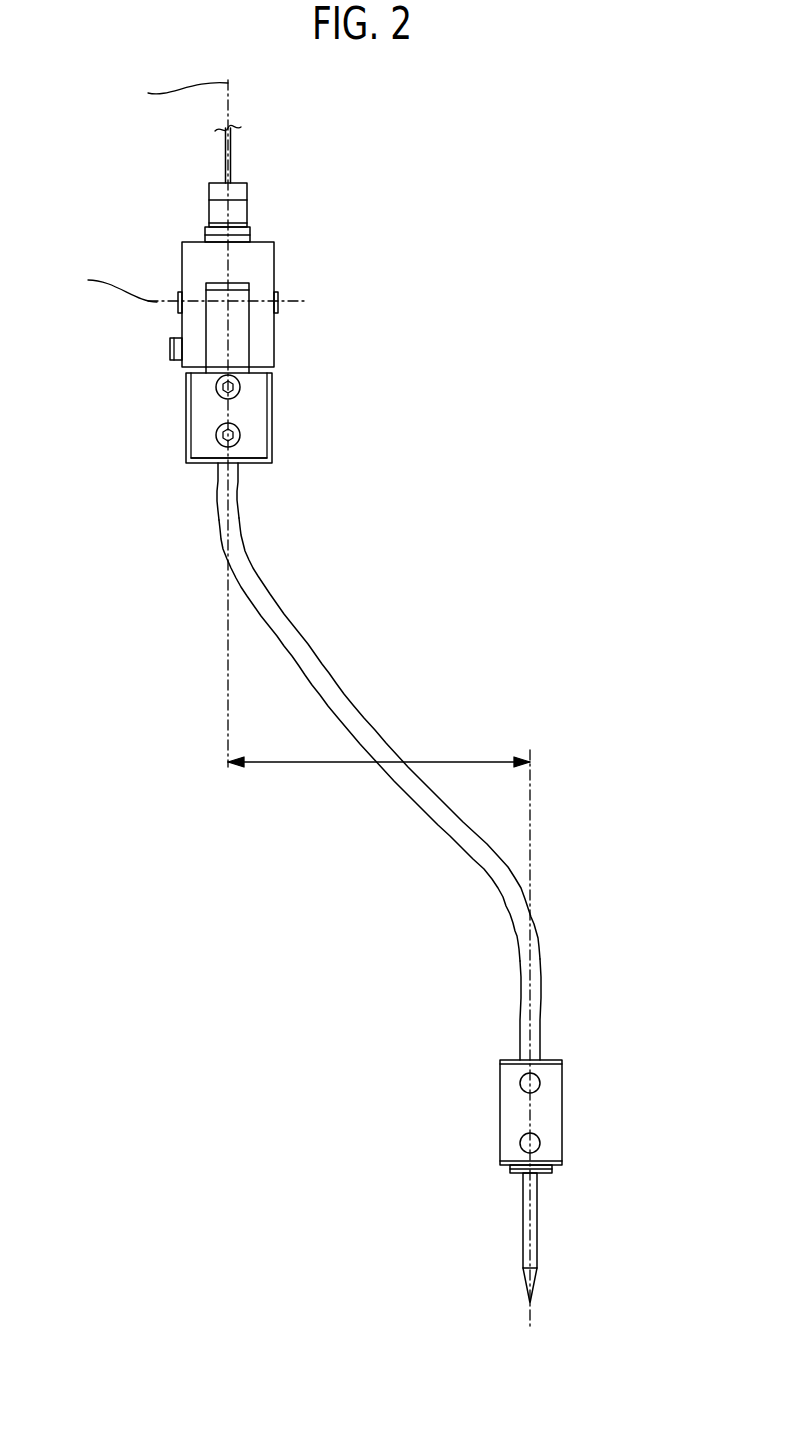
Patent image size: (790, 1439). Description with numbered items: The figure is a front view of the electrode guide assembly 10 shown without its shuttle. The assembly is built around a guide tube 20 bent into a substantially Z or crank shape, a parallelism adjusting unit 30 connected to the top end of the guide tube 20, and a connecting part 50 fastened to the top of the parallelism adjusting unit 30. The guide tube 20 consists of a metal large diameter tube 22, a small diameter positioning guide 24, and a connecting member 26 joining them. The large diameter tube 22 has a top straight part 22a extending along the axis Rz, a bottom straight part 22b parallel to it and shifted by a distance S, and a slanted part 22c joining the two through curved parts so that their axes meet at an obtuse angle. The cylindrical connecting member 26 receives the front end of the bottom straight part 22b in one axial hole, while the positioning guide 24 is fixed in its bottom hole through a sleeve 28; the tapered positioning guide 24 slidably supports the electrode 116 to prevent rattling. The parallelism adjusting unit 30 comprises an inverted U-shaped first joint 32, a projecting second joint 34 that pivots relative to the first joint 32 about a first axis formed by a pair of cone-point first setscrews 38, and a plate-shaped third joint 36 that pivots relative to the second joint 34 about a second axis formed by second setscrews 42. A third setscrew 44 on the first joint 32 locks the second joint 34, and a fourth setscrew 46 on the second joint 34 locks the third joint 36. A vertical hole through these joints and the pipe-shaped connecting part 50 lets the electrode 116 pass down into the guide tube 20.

The electrode guide assembly 10 is at (367, 702).
The guide tube 20 is at (445, 865).
The large diameter tube 22 is at (445, 761).
The top straight part 22a is at (238, 487).
The bottom straight part 22b is at (540, 1027).
The slanted part 22c is at (313, 673).
The positioning guide 24 is at (538, 1220).
The connecting member 26 is at (562, 1110).
The sleeve 28 is at (513, 1175).
The parallelism adjusting unit 30 is at (237, 391).
The first joint 32 is at (260, 270).
The second joint 34 is at (258, 403).
The third joint 36 is at (202, 460).
The first setscrews 38 is at (180, 310).
The second setscrews 42 is at (217, 385).
The third setscrew 44 is at (172, 350).
The fourth setscrew 46 is at (215, 432).
The connecting part 50 is at (238, 212).
The electrode 116 is at (231, 145).